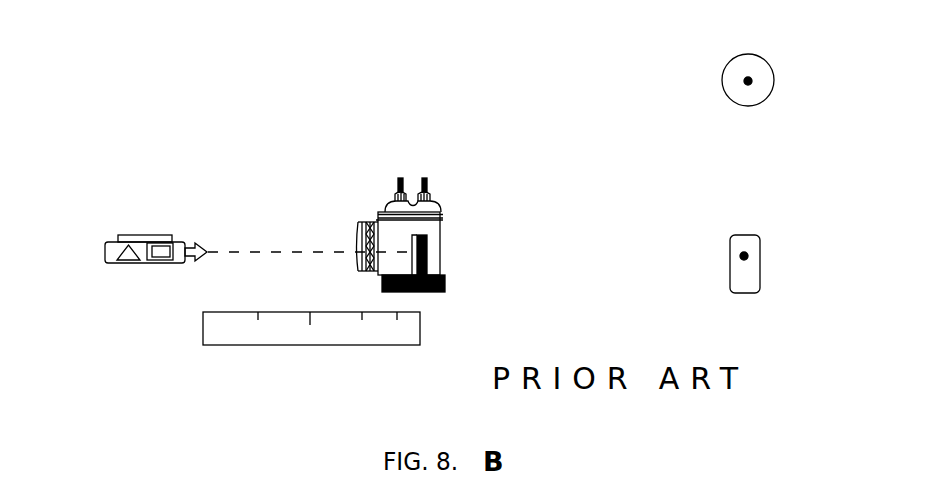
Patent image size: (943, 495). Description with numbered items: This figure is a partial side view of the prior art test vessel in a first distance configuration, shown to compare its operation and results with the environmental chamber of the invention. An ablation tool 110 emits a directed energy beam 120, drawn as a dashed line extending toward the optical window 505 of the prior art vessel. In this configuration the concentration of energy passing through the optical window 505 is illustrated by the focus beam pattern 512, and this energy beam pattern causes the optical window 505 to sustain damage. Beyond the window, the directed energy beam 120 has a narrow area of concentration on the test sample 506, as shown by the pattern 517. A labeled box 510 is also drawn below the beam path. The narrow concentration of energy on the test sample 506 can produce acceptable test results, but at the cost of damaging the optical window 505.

The ablation tool 110 is at (158, 247).
The directed energy beam 120 is at (232, 252).
The optical window 505 is at (358, 230).
The test sample 506 is at (427, 238).
The target object 510 is at (300, 332).
The focus beam pattern 512 is at (743, 93).
The pattern 517 is at (742, 272).